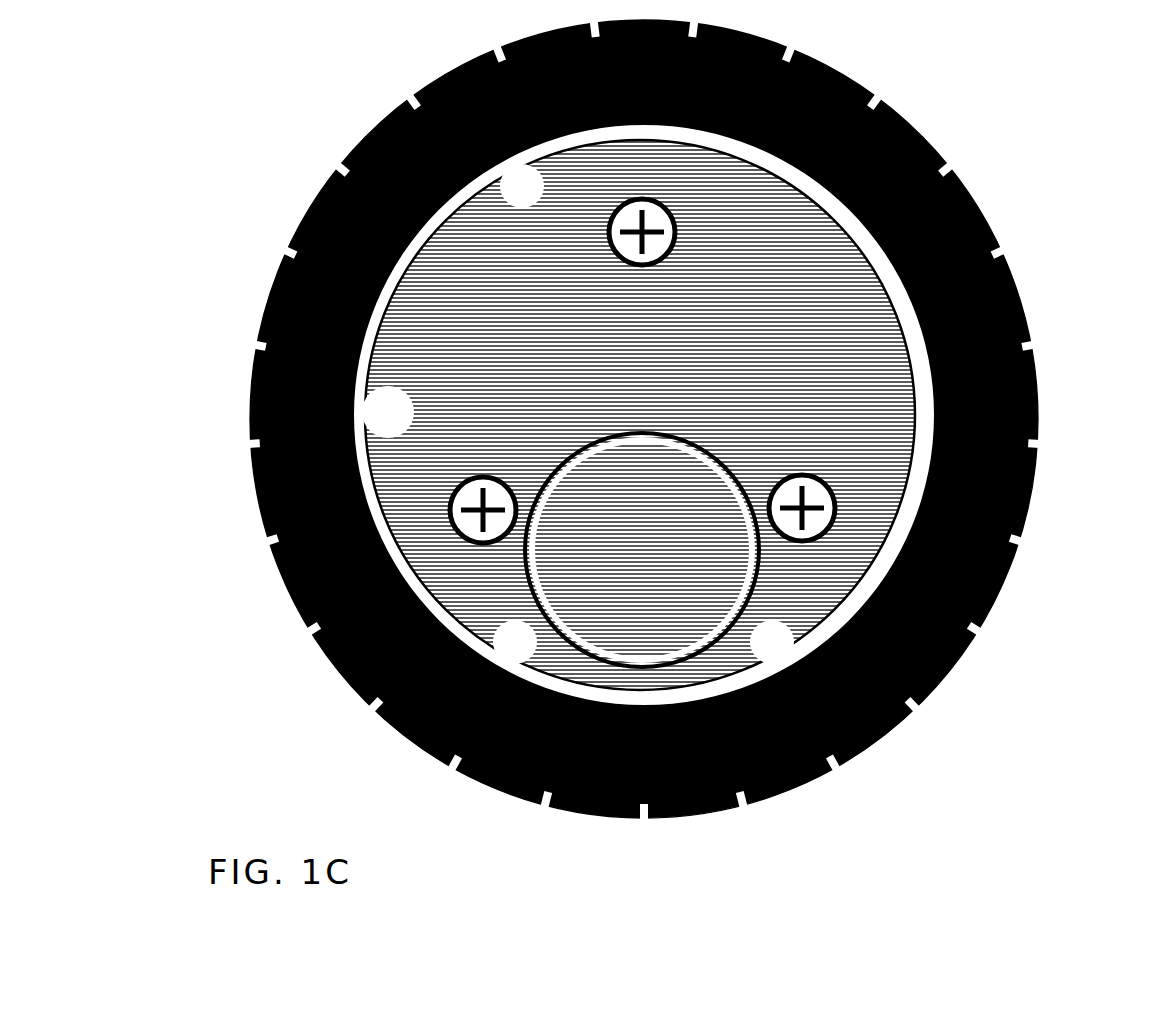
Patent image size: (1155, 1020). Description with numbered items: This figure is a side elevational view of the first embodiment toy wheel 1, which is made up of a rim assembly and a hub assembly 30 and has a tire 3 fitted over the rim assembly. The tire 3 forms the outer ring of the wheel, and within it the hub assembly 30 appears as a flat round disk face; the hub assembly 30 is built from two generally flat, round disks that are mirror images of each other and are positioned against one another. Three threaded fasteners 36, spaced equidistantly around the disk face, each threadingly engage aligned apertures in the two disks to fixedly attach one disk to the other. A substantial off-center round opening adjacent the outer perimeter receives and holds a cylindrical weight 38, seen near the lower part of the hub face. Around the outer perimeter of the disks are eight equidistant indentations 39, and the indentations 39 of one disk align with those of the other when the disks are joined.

The first embodiment toy wheel 1 is at (1092, 93).
The tire 3 is at (1003, 297).
The hub assembly 30 is at (592, 370).
The threaded fasteners 36 is at (658, 237).
The cylindrical weight 38 is at (665, 545).
The indentations 39 is at (520, 222).